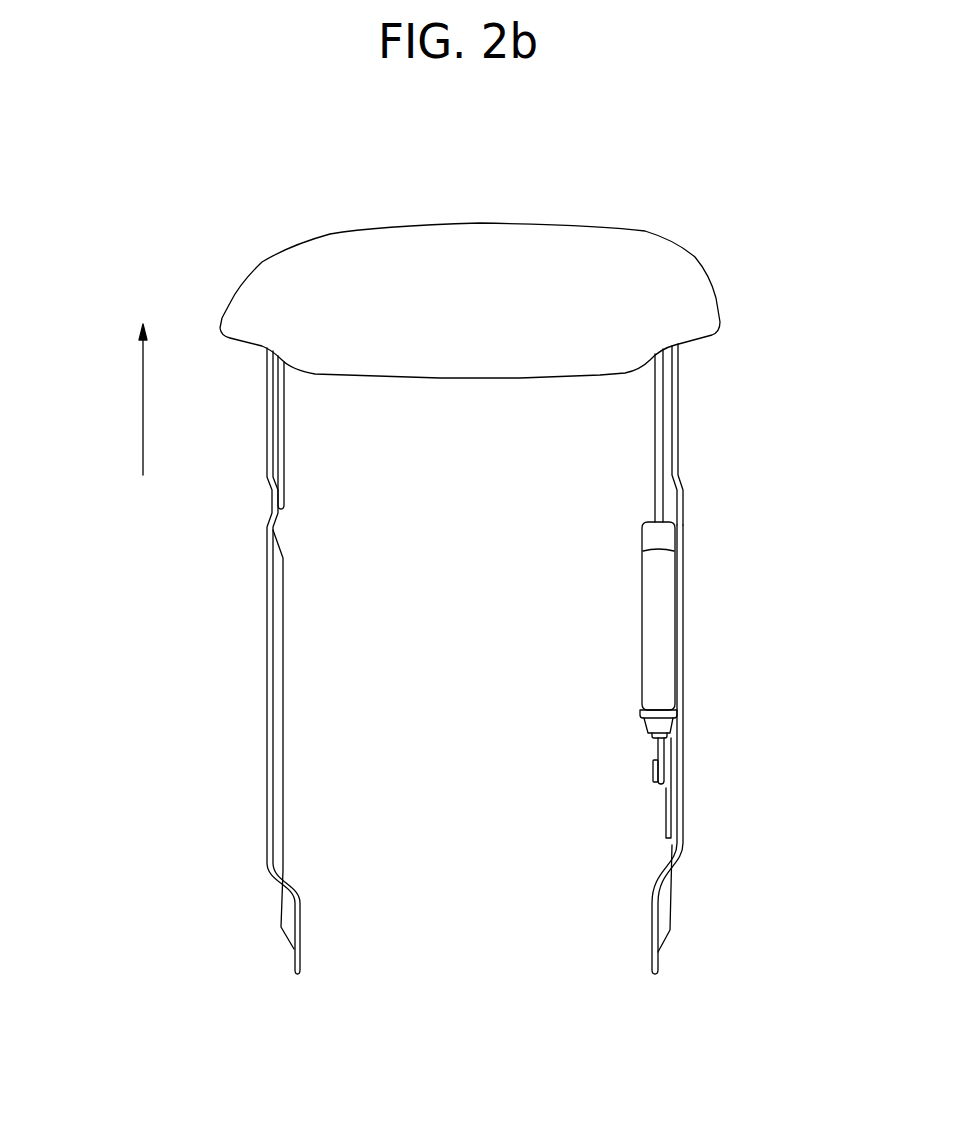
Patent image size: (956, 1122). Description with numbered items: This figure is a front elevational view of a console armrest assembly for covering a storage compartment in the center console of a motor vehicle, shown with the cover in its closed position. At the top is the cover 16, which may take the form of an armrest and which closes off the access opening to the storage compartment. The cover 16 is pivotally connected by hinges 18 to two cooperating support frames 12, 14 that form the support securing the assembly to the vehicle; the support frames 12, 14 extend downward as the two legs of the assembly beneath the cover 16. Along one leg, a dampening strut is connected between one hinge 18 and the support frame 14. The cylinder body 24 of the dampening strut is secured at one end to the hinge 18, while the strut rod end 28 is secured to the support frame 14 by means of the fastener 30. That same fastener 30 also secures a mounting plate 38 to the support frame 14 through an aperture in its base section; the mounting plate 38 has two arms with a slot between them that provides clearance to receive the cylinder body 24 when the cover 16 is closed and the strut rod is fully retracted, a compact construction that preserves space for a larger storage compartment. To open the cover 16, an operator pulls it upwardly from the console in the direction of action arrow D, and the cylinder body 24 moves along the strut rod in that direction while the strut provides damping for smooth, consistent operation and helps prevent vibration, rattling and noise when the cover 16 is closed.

The support frame 12 is at (277, 840).
The support frame 14 is at (680, 847).
The cover 16 is at (612, 246).
The hinge 18 is at (280, 450).
The cylinder body 24 is at (662, 600).
The strut rod end 28 is at (660, 750).
The fastener 30 is at (655, 772).
The mounting plate 38 is at (672, 797).
The action arrow D is at (138, 407).